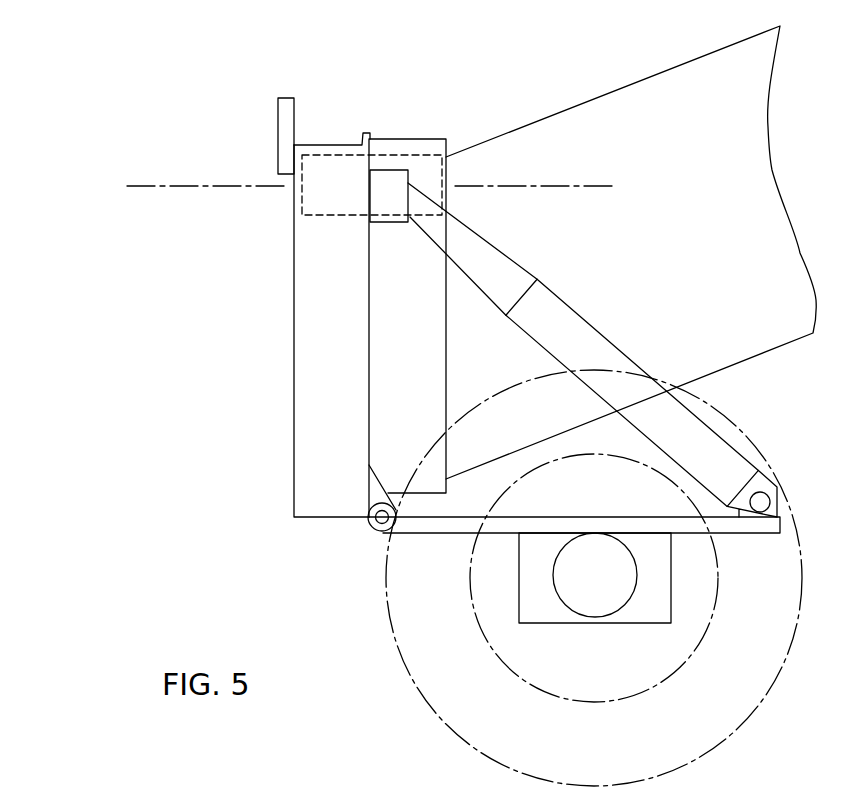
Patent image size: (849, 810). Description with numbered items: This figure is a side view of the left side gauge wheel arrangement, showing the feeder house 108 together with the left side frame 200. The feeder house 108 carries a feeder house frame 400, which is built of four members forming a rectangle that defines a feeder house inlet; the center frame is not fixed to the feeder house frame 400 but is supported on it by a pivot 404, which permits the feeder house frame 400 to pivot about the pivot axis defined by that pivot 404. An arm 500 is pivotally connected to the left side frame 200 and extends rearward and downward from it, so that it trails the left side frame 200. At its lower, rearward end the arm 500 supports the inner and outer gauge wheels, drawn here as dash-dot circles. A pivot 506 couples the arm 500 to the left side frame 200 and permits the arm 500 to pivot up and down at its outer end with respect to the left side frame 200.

The feeder house 108 is at (552, 114).
The left side frame 200 is at (336, 358).
The feeder house frame 400 is at (398, 138).
The pivot 404 is at (337, 157).
The arm 500 is at (432, 524).
The pivot 506 is at (382, 517).